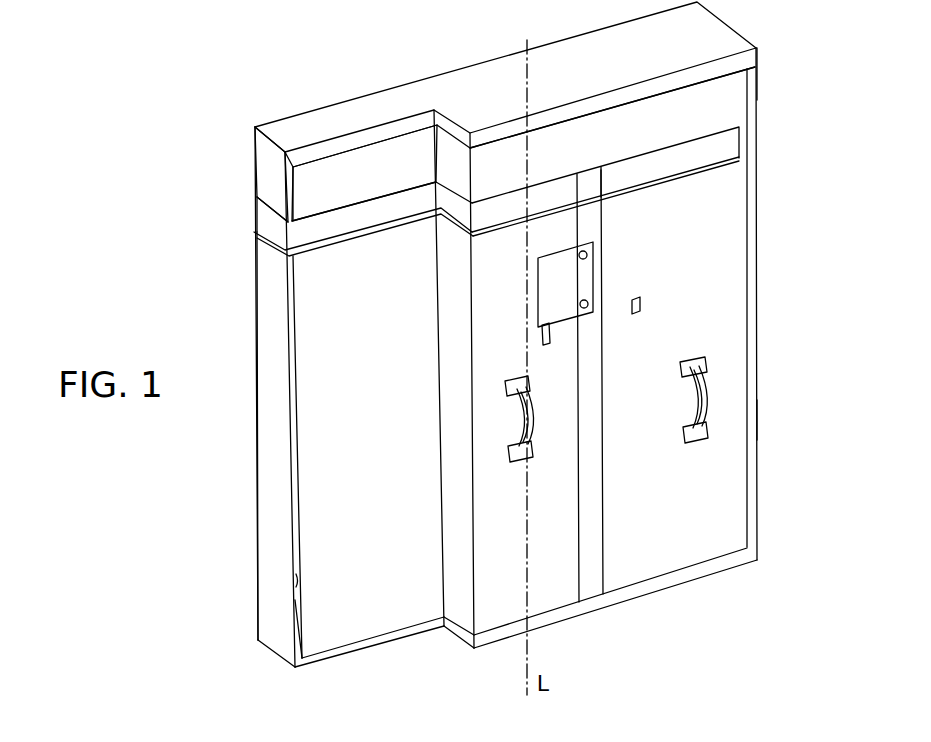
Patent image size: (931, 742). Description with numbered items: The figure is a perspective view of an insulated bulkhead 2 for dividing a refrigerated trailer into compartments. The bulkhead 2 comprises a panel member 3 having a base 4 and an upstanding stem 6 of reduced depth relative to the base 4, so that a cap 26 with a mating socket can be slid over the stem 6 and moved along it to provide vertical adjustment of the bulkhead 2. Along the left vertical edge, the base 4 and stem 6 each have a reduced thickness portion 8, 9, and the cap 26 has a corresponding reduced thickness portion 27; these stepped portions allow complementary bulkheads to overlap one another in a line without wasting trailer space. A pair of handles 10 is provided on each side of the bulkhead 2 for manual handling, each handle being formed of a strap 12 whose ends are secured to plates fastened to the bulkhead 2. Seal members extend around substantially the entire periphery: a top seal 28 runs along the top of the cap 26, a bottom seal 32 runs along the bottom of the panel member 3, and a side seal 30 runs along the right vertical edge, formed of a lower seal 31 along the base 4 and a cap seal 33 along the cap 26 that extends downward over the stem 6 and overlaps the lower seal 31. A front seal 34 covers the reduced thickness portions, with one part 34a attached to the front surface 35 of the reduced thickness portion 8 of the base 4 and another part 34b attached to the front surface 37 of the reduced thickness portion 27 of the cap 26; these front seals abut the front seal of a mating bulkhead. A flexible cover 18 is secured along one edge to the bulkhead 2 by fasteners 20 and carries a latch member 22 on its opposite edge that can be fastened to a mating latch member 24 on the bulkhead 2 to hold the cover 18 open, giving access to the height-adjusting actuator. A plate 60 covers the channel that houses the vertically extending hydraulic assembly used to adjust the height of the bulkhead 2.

The bulkhead 2 is at (799, 231).
The panel member 3 is at (752, 513).
The base 4 is at (679, 275).
The stem 6 is at (679, 170).
The reduced thickness portion 8 is at (265, 445).
The reduced thickness portion 9 is at (262, 222).
The handle 10 is at (685, 372).
The strap 12 is at (702, 393).
The cover 18 is at (547, 285).
The fastener 20 is at (588, 256).
The latch member 22 is at (545, 345).
The mating latch member 24 is at (635, 315).
The cap 26 is at (576, 153).
The reduced thickness portion 27 is at (262, 163).
The top seal 28 is at (757, 50).
The side seal 30 is at (779, 419).
The lower seal 31 is at (752, 369).
The bottom seal 32 is at (630, 590).
The cap seal 33 is at (756, 95).
The front seal 34 is at (361, 508).
The front seal part 34a is at (318, 610).
The front seal part 34b is at (360, 177).
The front surface 35 is at (297, 578).
The front surface 37 is at (288, 168).
The plate 60 is at (603, 505).